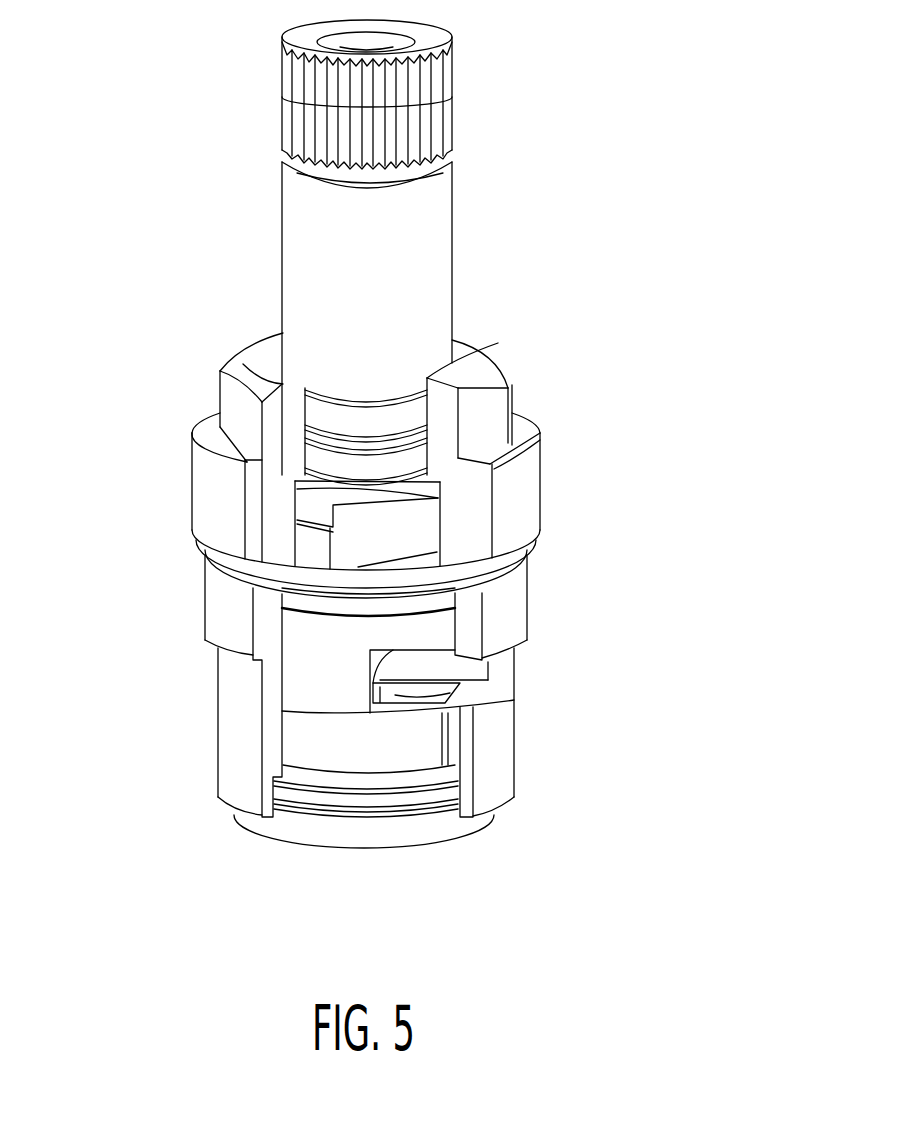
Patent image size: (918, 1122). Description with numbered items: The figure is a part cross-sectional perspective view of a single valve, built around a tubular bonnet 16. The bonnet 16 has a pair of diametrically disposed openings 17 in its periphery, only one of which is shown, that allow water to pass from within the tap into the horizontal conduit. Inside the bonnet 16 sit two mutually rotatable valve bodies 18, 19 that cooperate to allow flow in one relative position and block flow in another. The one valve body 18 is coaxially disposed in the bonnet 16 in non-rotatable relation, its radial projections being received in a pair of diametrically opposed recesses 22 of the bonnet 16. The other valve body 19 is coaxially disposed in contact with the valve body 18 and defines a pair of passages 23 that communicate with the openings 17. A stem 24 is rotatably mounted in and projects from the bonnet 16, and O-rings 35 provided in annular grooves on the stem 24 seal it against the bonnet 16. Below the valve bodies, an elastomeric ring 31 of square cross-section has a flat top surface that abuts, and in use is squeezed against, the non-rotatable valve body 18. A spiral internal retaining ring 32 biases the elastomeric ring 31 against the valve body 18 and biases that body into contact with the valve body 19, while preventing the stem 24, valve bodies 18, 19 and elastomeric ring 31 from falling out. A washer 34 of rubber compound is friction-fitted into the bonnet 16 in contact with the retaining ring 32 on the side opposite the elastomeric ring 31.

The bonnet 16 is at (525, 503).
The openings 17 is at (470, 622).
The valve body 18 is at (303, 742).
The valve body 19 is at (300, 663).
The recesses 22 is at (462, 706).
The passages 23 is at (380, 663).
The stem 24 is at (440, 248).
The elastomeric ring 31 is at (447, 775).
The spiral internal retaining ring 32 is at (447, 803).
The washer 34 is at (423, 833).
The O-rings 35 is at (410, 462).